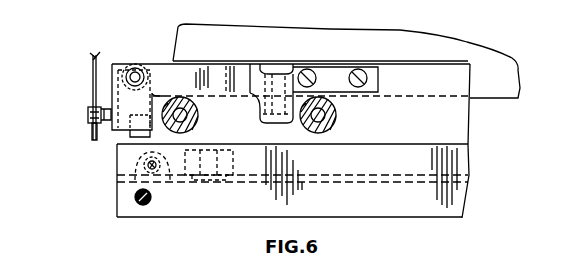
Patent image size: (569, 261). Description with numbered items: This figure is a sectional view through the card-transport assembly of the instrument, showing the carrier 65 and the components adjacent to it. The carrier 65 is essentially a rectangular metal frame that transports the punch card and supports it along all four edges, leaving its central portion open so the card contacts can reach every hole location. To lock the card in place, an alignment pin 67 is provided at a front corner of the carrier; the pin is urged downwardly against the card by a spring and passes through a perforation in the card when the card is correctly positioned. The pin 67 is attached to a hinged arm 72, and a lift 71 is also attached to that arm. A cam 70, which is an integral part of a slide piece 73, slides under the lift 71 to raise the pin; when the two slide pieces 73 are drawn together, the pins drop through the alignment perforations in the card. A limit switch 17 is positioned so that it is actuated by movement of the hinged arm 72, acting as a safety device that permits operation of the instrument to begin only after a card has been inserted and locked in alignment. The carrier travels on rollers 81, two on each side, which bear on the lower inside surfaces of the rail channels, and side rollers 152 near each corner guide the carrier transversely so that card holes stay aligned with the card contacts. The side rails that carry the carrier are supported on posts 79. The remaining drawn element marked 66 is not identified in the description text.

The carrier 65 is at (410, 176).
The cover 66 is at (518, 75).
The alignment pin 67 is at (152, 66).
The limit switch 17 is at (130, 133).
The slide piece 73 is at (92, 66).
The lift 71 is at (88, 113).
The cam 70 is at (92, 128).
The side roller 152 is at (148, 165).
The roller 81 is at (238, 160).
The post 79 is at (149, 204).
The hinged arm 72 is at (220, 82).